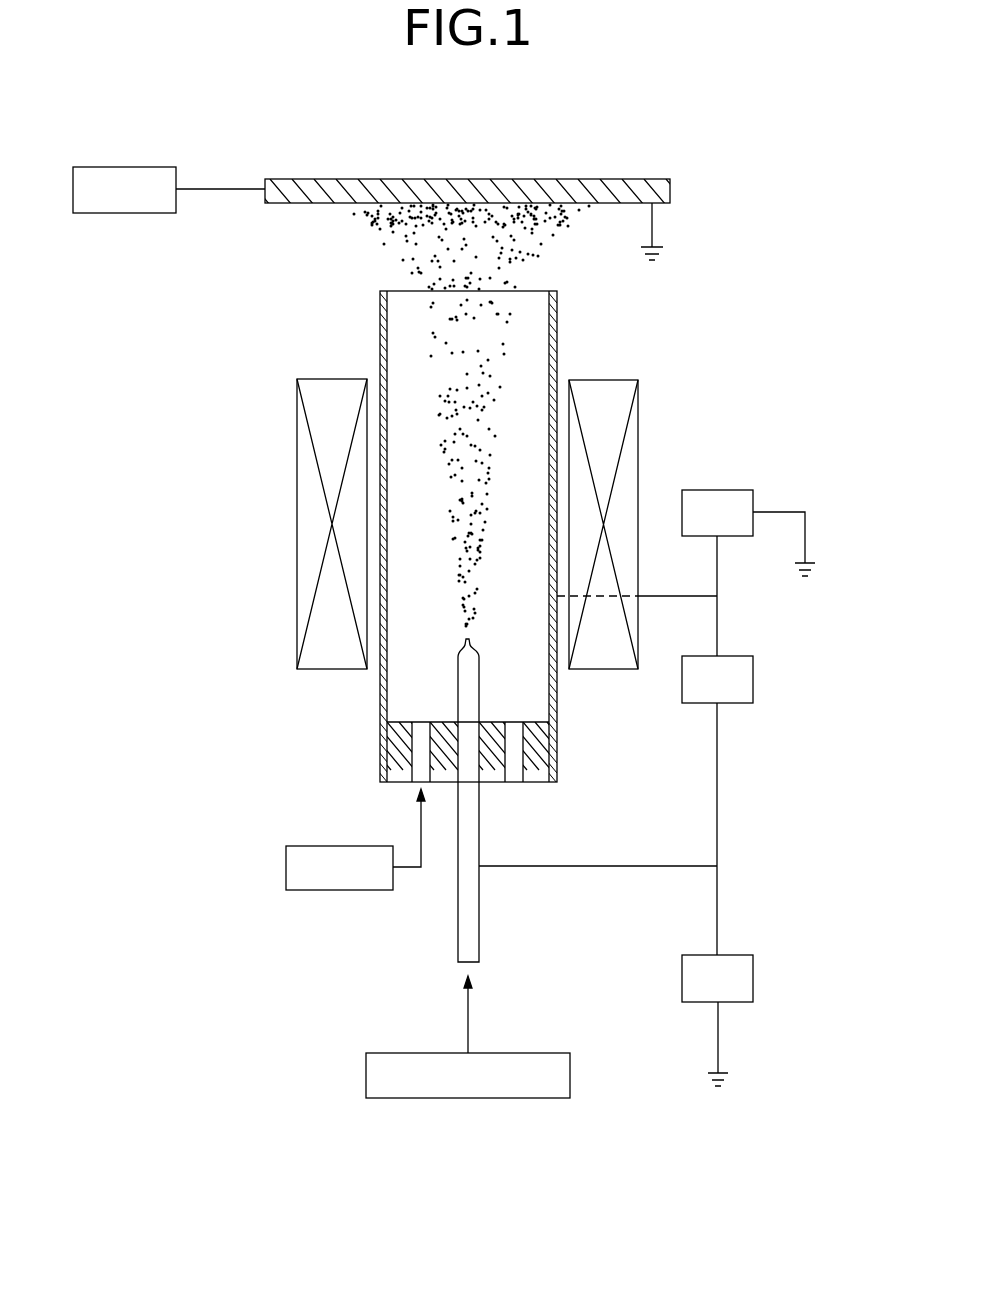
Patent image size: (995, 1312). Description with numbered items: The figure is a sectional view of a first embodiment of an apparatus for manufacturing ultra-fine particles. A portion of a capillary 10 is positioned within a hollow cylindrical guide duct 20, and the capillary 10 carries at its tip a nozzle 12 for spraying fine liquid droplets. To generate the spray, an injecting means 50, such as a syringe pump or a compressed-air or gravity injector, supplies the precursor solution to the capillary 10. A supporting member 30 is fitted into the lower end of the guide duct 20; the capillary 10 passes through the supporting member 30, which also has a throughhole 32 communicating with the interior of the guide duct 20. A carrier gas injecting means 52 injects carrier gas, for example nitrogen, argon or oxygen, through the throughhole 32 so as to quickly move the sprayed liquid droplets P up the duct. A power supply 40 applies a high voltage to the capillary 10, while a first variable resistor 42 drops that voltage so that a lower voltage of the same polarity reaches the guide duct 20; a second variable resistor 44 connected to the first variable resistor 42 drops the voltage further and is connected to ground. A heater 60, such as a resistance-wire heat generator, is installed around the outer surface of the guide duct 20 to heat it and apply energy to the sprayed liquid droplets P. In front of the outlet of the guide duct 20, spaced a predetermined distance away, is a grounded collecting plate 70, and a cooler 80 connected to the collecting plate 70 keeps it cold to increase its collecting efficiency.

The capillary 10 is at (458, 700).
The nozzle 12 is at (470, 638).
The guide duct 20 is at (557, 344).
The supporting member 30 is at (543, 752).
The throughhole 32 is at (513, 782).
The power supply 40 is at (753, 978).
The first variable resistor 42 is at (753, 677).
The second variable resistor 44 is at (718, 490).
The injecting means 50 is at (465, 1098).
The carrier gas injecting means 52 is at (338, 890).
The heater 60 is at (297, 415).
The collecting plate 70 is at (670, 189).
The cooler 80 is at (122, 213).
The sprayed liquid droplets P is at (452, 341).